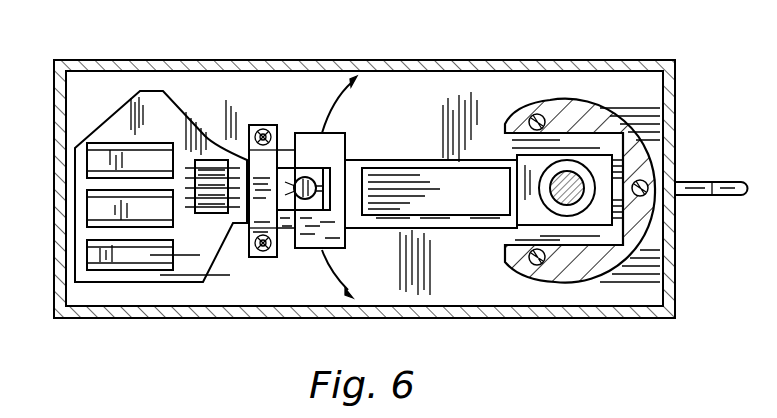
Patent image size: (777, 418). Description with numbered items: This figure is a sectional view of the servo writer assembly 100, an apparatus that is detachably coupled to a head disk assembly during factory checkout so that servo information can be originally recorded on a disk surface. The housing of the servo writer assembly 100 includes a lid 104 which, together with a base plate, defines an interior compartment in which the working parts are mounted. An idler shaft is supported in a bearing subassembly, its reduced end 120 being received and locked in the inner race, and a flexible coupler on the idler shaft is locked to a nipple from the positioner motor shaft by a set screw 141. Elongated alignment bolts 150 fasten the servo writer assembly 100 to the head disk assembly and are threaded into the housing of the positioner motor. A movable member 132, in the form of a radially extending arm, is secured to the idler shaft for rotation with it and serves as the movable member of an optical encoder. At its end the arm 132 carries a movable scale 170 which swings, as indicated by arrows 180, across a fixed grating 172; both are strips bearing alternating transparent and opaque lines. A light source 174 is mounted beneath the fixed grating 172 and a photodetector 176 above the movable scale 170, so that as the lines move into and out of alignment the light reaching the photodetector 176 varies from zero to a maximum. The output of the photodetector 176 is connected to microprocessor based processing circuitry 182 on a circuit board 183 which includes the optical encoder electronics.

The servo writer assembly 100 is at (159, 42).
The lid 104 is at (407, 62).
The reduced end 120 is at (585, 180).
The movable member 132 is at (440, 218).
The set screw 141 is at (690, 198).
The elongated alignment bolts 150 is at (537, 114).
The movable scale 170 is at (338, 142).
The fixed grating 172 is at (310, 190).
The light source 174 is at (341, 246).
The photodetector 176 is at (306, 109).
The arrows 180 is at (340, 107).
The processing circuitry 182 is at (100, 197).
The circuit board 183 is at (196, 273).